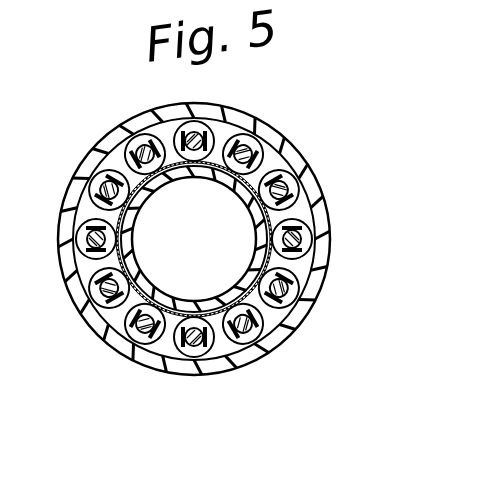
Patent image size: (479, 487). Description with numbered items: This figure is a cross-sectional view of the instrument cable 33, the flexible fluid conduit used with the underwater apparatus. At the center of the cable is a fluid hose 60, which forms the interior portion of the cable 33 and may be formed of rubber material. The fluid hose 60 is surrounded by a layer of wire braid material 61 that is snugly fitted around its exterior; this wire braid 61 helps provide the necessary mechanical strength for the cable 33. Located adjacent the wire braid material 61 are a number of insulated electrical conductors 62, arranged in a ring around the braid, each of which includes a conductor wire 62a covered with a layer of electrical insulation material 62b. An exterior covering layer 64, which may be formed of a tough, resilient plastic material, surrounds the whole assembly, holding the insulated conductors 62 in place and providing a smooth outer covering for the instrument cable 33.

The instrument cable 33 is at (80, 159).
The fluid hose 60 is at (194, 239).
The wire braid material 61 is at (194, 239).
The insulated electrical conductors 62 is at (240, 239).
The conductor wire 62a is at (240, 239).
The electrical insulation material 62b is at (216, 239).
The exterior covering layer 64 is at (74, 111).